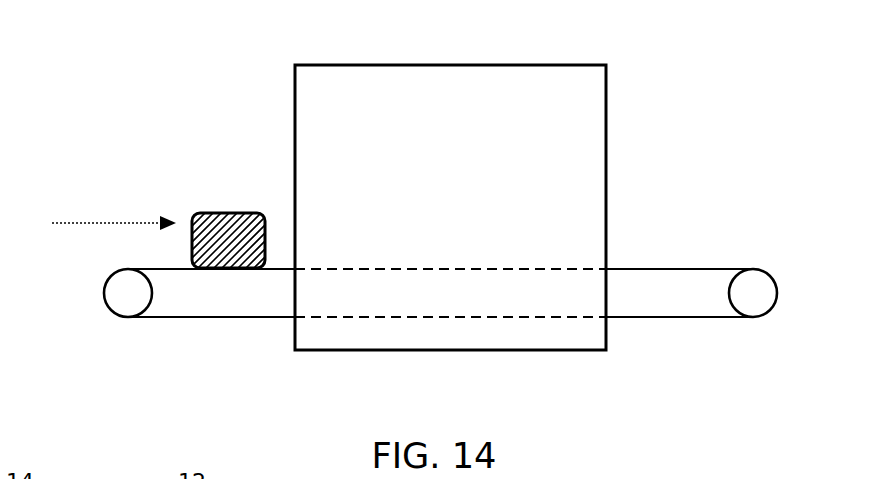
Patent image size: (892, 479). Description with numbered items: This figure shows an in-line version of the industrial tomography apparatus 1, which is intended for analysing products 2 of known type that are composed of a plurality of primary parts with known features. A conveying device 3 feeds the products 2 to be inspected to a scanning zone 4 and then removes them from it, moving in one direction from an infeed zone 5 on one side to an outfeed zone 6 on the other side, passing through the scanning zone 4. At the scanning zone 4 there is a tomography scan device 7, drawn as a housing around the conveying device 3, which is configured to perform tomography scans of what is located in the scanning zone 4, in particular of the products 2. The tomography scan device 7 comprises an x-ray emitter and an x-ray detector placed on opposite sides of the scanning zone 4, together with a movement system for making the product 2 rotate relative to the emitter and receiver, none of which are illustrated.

The industrial tomography apparatus 1 is at (137, 125).
The product 2 is at (237, 225).
The conveying device 3 is at (255, 305).
The scanning zone 4 is at (458, 210).
The infeed zone 5 is at (80, 254).
The outfeed zone 6 is at (773, 229).
The tomography scan device 7 is at (546, 210).